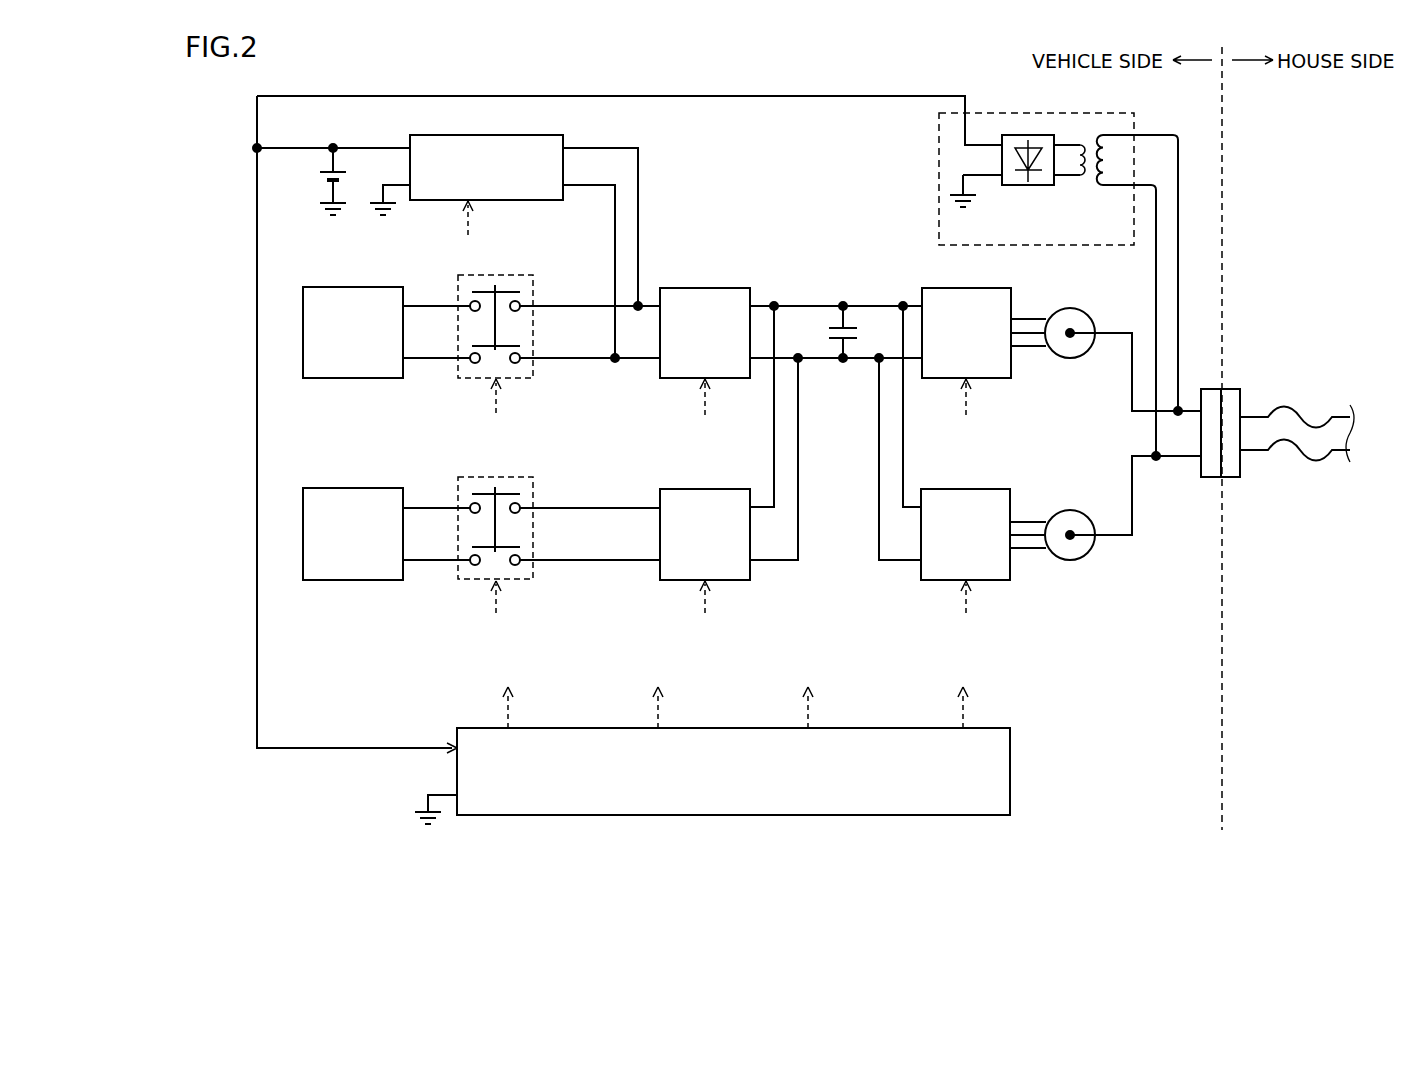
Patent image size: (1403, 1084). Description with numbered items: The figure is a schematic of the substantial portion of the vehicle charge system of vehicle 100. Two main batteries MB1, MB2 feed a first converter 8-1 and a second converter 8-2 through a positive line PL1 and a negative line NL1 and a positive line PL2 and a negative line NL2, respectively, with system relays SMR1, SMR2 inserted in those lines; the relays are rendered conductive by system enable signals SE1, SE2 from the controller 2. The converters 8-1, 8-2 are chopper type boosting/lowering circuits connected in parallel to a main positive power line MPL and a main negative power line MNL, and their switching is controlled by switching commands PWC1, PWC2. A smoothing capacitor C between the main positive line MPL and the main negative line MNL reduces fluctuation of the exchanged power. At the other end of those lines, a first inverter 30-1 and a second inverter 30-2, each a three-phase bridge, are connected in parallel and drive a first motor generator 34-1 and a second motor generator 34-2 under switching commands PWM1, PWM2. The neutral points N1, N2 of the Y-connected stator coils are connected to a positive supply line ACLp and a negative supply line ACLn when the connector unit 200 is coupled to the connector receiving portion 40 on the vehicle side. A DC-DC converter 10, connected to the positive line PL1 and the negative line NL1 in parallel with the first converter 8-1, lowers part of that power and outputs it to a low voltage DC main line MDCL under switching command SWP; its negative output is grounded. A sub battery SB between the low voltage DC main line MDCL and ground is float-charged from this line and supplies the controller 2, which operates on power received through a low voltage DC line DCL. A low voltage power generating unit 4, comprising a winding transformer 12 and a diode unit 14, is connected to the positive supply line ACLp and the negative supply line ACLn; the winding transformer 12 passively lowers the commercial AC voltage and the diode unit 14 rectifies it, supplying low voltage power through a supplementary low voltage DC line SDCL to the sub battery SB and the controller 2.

The vehicle 100 is at (742, 72).
The controller 2 is at (1010, 775).
The low voltage power generating unit 4 is at (1108, 113).
The DC-DC converter 10 is at (478, 135).
The winding transformer 12 is at (1090, 190).
The diode unit 14 is at (1022, 185).
The first converter 8-1 is at (700, 288).
The second converter 8-2 is at (700, 489).
The first inverter 30-1 is at (965, 288).
The second inverter 30-2 is at (965, 489).
The first motor generator 34-1 is at (1080, 310).
The second motor generator 34-2 is at (1080, 512).
The connector receiving portion 40 is at (1208, 478).
The connector unit 200 is at (1236, 389).
The main battery MB1 is at (345, 287).
The main battery MB2 is at (345, 488).
The system relay SMR1 is at (505, 275).
The system relay SMR2 is at (505, 477).
The sub battery SB is at (321, 178).
The low voltage DC main line MDCL is at (297, 148).
The supplementary low voltage DC line SDCL is at (808, 97).
The low voltage DC line DCL is at (256, 626).
The positive line PL1 is at (552, 306).
The negative line NL1 is at (552, 358).
The positive line PL2 is at (592, 507).
The negative line NL2 is at (592, 560).
The main positive power line MPL is at (808, 306).
The main negative power line MNL is at (831, 360).
The smoothing capacitor C is at (825, 333).
The neutral point N1 is at (1070, 336).
The neutral point N2 is at (1070, 538).
The system enable signal SE1 is at (497, 409).
The system enable signal SE2 is at (497, 610).
The switching command SWP is at (469, 229).
The switching command PWC1 is at (704, 408).
The switching command PWC2 is at (704, 610).
The switching command PWM1 is at (965, 408).
The switching command PWM2 is at (965, 610).
The positive supply line ACLp is at (1283, 406).
The negative supply line ACLn is at (1305, 460).